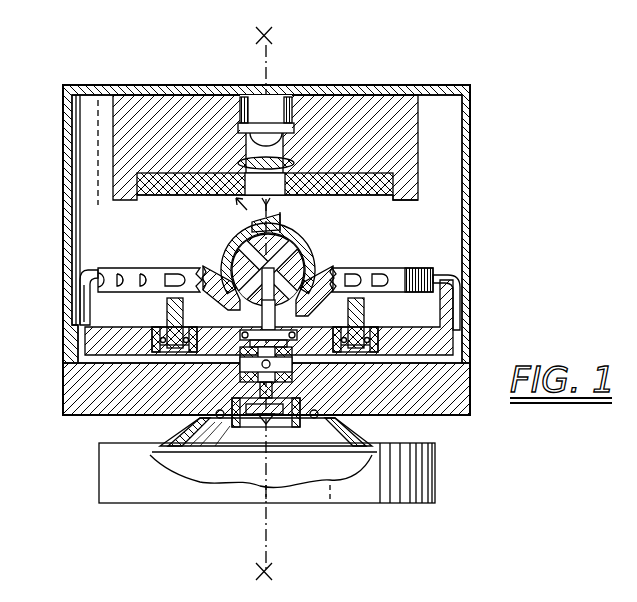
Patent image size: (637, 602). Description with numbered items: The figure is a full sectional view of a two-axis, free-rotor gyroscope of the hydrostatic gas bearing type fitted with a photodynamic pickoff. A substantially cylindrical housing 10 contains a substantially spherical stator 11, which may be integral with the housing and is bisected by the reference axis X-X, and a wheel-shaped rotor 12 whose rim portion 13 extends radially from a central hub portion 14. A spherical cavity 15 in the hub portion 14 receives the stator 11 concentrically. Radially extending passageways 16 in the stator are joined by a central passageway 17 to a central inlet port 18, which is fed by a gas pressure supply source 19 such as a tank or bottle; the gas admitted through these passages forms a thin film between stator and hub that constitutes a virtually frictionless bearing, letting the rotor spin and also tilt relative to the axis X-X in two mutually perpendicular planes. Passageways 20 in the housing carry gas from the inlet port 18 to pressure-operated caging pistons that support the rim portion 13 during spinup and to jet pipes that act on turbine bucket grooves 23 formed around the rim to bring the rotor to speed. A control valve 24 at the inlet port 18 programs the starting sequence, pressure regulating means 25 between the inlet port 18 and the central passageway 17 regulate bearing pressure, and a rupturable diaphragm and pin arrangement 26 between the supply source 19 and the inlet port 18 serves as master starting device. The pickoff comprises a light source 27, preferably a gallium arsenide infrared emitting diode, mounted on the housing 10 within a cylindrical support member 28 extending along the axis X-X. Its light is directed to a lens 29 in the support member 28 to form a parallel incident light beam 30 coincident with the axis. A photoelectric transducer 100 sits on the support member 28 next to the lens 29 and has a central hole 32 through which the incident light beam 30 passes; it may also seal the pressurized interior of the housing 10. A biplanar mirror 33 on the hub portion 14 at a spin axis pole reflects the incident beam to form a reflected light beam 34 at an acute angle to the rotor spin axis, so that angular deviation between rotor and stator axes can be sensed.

The housing 10 is at (471, 168).
The stator 11 is at (302, 282).
The rotor 12 is at (165, 264).
The rim portion 13 is at (426, 266).
The hub portion 14 is at (226, 246).
The spherical cavity 15 is at (232, 268).
The radially extending passageways 16 is at (295, 262).
The central passageway 17 is at (252, 330).
The central inlet port 18 is at (242, 384).
The gas pressure supply source 19 is at (320, 473).
The passageways 20 is at (424, 363).
The turbine bucket grooves 23 is at (146, 284).
The control valve 24 is at (292, 386).
The pressure regulating means 25 is at (298, 332).
The rupturable diaphragm and pin arrangement 26 is at (252, 430).
The light source 27 is at (278, 96).
The cylindrical support member 28 is at (418, 140).
The lens 29 is at (258, 162).
The incident light beam 30 is at (278, 210).
The central hole 32 is at (288, 185).
The biplanar mirror 33 is at (292, 224).
The reflected light beam 34 is at (247, 206).
The photoelectric transducer 100 is at (390, 200).